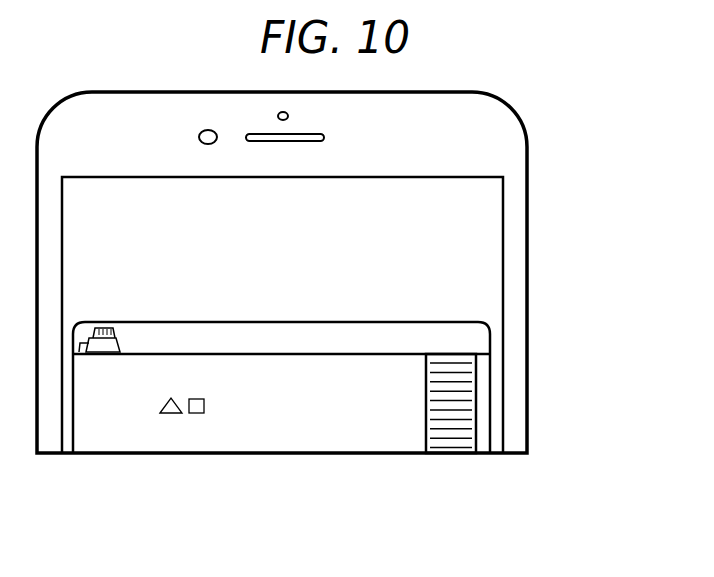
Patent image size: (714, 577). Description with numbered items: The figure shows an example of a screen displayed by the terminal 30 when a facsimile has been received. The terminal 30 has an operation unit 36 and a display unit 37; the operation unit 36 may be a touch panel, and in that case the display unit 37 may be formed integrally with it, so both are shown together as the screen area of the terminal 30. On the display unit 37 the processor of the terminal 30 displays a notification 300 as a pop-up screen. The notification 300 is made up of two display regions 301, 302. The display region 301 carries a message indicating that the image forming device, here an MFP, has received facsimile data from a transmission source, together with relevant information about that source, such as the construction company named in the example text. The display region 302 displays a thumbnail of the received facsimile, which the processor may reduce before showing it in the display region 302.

The terminal 30 is at (527, 165).
The operation unit 36 is at (346, 315).
The display unit 37 is at (503, 224).
The notification 300 is at (332, 432).
The display region 301 is at (82, 455).
The display region 302 is at (449, 448).